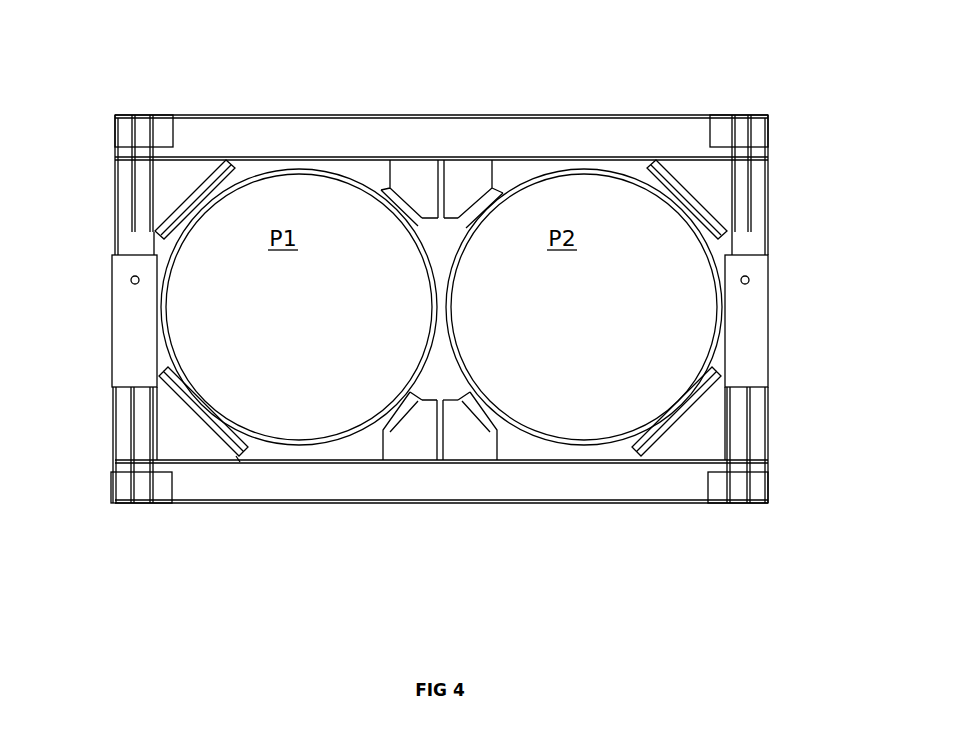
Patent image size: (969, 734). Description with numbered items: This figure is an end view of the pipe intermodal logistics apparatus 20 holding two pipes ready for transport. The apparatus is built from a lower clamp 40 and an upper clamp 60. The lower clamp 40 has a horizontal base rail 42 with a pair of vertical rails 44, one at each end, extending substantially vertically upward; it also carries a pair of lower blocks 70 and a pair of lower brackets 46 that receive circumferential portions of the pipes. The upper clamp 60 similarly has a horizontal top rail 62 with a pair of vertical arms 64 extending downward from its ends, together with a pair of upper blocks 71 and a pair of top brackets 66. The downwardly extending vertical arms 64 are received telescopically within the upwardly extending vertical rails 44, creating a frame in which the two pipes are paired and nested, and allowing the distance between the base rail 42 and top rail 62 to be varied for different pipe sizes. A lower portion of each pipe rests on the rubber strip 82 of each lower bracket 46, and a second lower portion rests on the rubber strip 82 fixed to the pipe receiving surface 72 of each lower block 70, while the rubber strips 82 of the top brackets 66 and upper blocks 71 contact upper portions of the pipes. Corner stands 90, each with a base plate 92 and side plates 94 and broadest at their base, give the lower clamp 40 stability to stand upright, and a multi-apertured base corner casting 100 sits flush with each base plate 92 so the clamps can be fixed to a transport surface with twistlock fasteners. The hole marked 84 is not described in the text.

The pipe intermodal logistics apparatus 20 is at (537, 585).
The lower clamp 40 is at (785, 355).
The horizontal base rail 42 is at (547, 490).
The vertical rails 44 is at (115, 320).
The lower brackets 46 is at (223, 463).
The upper clamp 60 is at (782, 181).
The horizontal top rail 62 is at (338, 130).
The vertical arms 64 is at (112, 240).
The top brackets 66 is at (210, 182).
The lower blocks 70 is at (422, 450).
The upper blocks 71 is at (468, 188).
The pipe receiving surface 72 is at (472, 460).
The rubber strip 82 is at (381, 184).
The fastener hole 84 is at (770, 278).
The corner stands 90 is at (94, 410).
The base plate 92 is at (733, 503).
The side plates 94 is at (768, 418).
The base corner casting 100 is at (717, 117).